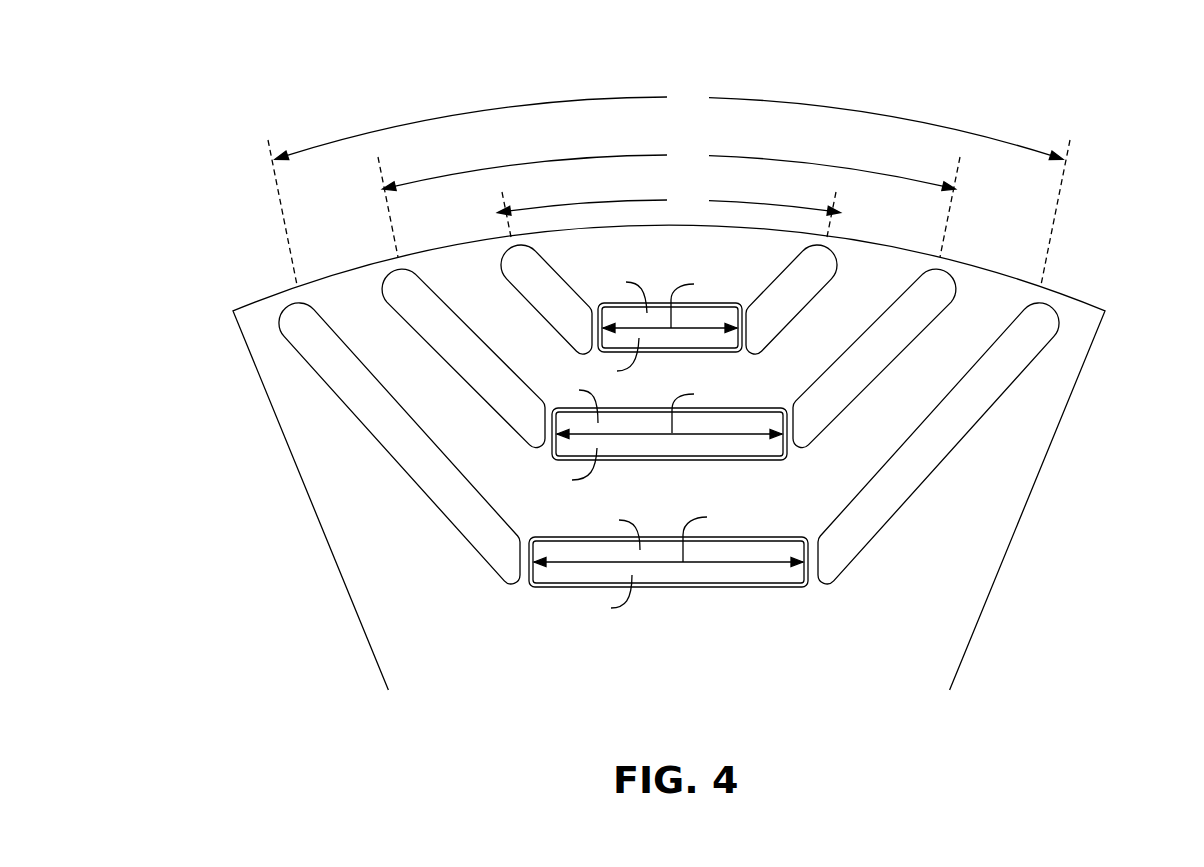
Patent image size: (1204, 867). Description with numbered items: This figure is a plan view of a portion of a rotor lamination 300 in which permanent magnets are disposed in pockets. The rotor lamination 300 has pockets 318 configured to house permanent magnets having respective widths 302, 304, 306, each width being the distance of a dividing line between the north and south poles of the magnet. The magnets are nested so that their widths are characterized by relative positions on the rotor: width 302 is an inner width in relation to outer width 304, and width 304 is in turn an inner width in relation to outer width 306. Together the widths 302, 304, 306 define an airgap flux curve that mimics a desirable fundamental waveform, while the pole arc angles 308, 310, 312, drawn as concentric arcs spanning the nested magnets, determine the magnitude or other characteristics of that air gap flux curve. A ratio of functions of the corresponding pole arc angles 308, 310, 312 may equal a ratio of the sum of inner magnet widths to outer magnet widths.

The rotor lamination 300 is at (1065, 293).
The magnet width 302 is at (663, 325).
The magnet width 304 is at (663, 433).
The magnet width 306 is at (673, 562).
The pole arc angle 308 is at (615, 201).
The pole arc angle 310 is at (593, 157).
The pole arc angle 312 is at (537, 104).
The pockets 318 is at (297, 333).